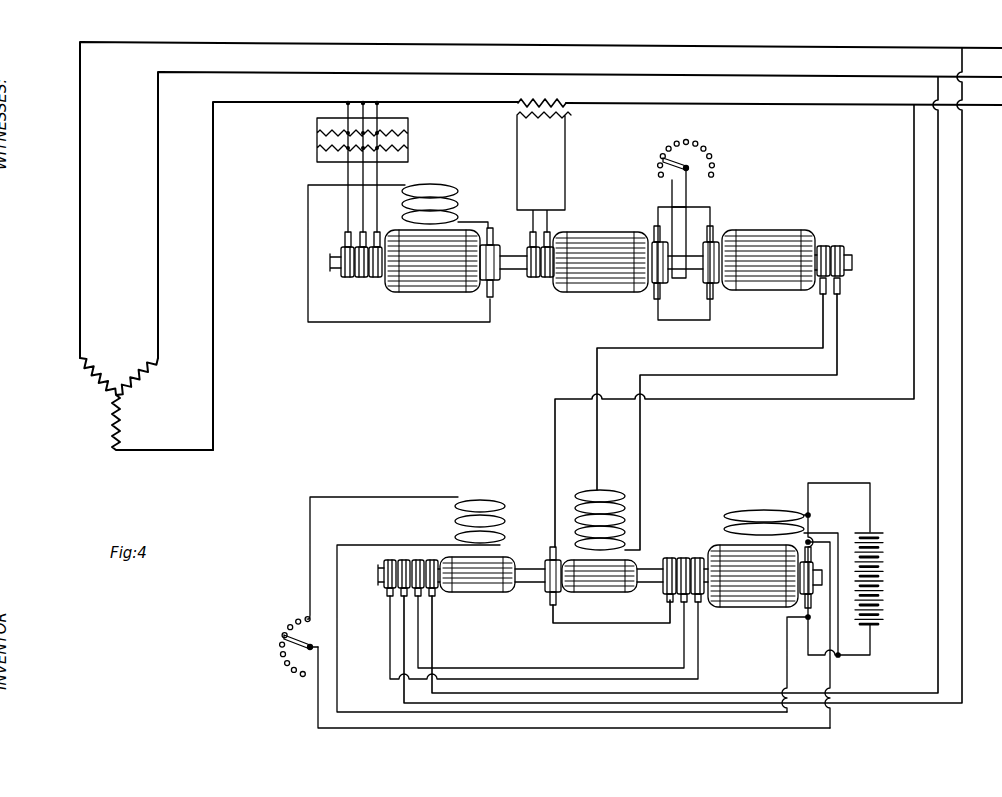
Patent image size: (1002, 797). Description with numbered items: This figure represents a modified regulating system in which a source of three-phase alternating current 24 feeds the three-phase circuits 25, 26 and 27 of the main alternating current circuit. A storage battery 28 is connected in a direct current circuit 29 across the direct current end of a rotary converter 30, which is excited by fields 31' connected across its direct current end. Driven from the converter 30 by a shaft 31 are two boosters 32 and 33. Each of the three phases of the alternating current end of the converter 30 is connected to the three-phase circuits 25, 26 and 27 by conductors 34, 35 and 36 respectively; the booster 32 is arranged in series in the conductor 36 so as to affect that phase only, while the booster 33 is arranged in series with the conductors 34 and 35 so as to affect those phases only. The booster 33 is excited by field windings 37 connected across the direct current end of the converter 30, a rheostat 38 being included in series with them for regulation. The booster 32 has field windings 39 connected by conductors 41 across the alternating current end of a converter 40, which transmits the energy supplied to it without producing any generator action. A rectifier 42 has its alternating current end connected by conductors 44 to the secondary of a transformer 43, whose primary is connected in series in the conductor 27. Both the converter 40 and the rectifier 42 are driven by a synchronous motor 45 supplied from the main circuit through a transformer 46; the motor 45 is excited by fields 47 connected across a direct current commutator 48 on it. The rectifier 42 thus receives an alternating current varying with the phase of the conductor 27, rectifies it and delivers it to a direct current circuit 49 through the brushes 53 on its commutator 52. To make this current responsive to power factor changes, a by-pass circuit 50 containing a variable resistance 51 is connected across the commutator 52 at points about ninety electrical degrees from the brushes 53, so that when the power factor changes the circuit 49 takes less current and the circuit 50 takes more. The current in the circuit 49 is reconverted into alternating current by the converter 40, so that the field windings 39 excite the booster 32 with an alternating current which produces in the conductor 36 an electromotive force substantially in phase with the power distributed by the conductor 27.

The source of three-phase alternating current 24 is at (122, 427).
The three-phase circuit 25 is at (808, 47).
The three-phase circuit 26 is at (808, 76).
The three-phase circuit 27 is at (808, 104).
The storage battery 28 is at (883, 573).
The direct current circuit 29 is at (872, 503).
The rotary converter 30 is at (730, 550).
The shaft 31 is at (584, 419).
The fields of converter 31' is at (781, 571).
The booster 32 is at (591, 583).
The booster 33 is at (487, 590).
The conductor 34 is at (962, 227).
The conductor 35 is at (938, 268).
The conductor 36 is at (914, 276).
The field windings 37 is at (475, 507).
The rheostat 38 is at (276, 653).
The field windings 39 is at (602, 490).
The converter 40 is at (780, 237).
The conductors 41 is at (770, 350).
The rectifier 42 is at (590, 240).
The transformer 43 is at (565, 108).
The conductors 44 is at (518, 180).
The synchronous motor 45 is at (425, 276).
The transformer 46 is at (410, 136).
The fields 47 is at (442, 187).
The direct current commutator 48 is at (497, 276).
The direct current circuit 49 is at (703, 207).
The by-pass circuit 50 is at (672, 195).
The variable resistance 51 is at (688, 142).
The commutator 52 is at (649, 284).
The brushes 53 is at (656, 230).